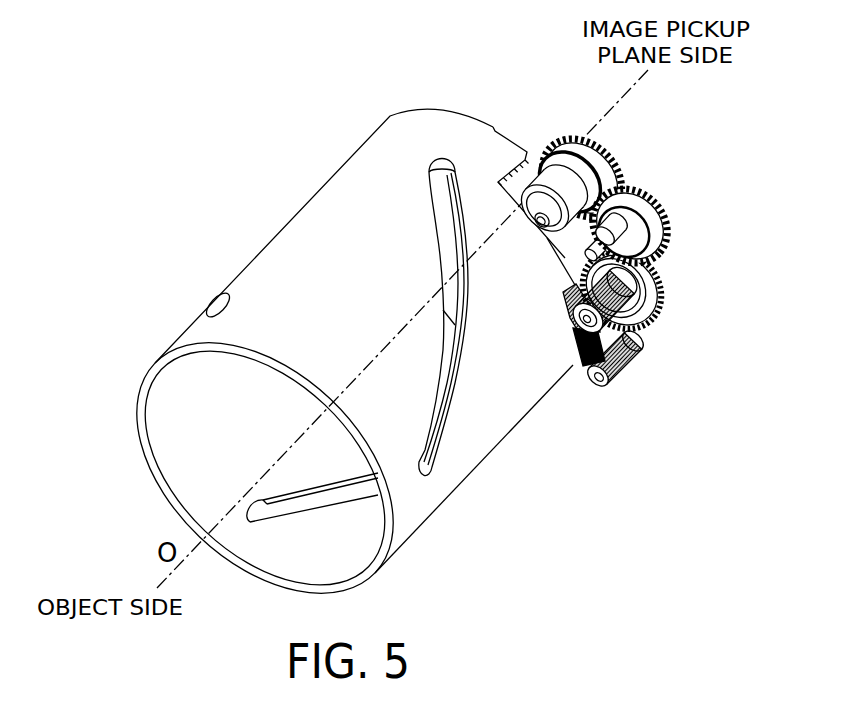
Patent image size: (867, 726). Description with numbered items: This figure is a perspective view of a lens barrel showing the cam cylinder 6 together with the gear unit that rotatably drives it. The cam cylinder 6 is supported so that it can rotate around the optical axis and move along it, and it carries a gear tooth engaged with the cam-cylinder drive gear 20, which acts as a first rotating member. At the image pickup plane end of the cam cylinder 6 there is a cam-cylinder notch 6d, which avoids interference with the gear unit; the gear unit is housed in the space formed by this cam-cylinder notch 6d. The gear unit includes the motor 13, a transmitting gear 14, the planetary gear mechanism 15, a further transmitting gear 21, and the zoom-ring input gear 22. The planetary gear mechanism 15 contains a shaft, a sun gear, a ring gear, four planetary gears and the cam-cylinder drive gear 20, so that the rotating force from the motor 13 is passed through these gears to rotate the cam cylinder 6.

The cam cylinder 6 is at (310, 247).
The cam-cylinder notch 6d is at (515, 171).
The motor 13 is at (602, 130).
The transmitting gear 14 is at (640, 200).
The planetary gear mechanism 15 is at (671, 349).
The cam-cylinder drive gear 20 is at (605, 302).
The transmitting gear 21 is at (653, 313).
The zoom-ring input gear 22 is at (632, 368).